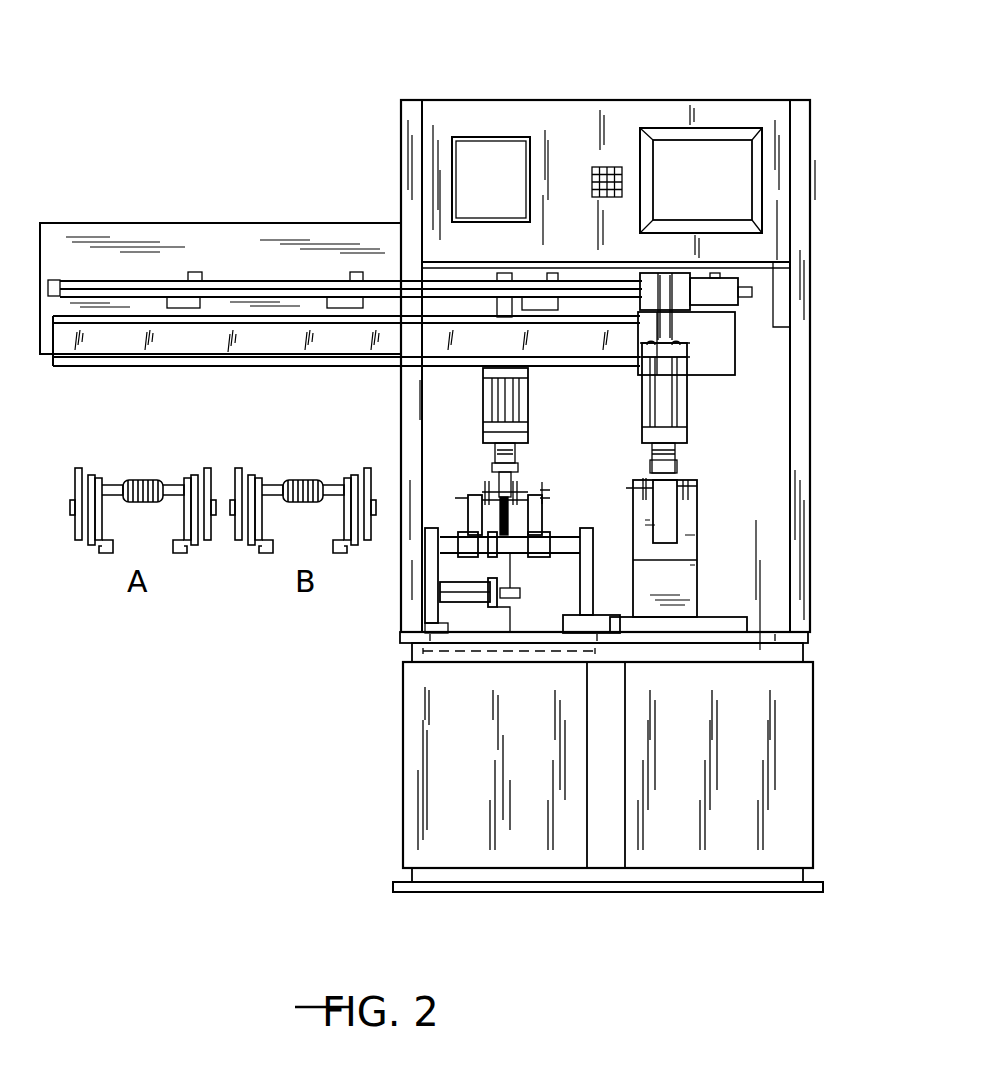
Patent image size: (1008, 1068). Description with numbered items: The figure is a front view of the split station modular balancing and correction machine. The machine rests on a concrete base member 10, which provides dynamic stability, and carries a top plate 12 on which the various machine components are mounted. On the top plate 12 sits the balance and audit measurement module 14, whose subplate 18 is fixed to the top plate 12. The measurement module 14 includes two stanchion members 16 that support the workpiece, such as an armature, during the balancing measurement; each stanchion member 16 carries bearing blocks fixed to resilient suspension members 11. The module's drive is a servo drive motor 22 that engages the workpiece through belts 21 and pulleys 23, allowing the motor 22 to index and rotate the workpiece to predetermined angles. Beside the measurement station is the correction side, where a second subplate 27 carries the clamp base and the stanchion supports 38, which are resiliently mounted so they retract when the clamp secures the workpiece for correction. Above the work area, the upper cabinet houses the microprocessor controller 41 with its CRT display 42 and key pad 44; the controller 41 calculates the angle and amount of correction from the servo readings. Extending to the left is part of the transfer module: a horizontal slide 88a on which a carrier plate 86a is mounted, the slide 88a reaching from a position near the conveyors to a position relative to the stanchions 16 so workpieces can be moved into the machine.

The concrete base member 10 is at (783, 758).
The resilient suspension members 11 is at (467, 517).
The top plate 12 is at (786, 659).
The balance and audit measurement module 14 is at (448, 521).
The stanchion members 16 is at (467, 520).
The subplate 18 is at (507, 652).
The belts 21 is at (511, 577).
The servo drive motor 22 is at (473, 632).
The pulleys 23 is at (538, 632).
The second subplate 27 is at (707, 627).
The stanchion supports 38 is at (632, 490).
The microprocessor controller 41 is at (487, 162).
The CRT display 42 is at (707, 160).
The key pad 44 is at (573, 127).
The carrier plate 86a is at (120, 333).
The horizontal slide 88a is at (73, 288).